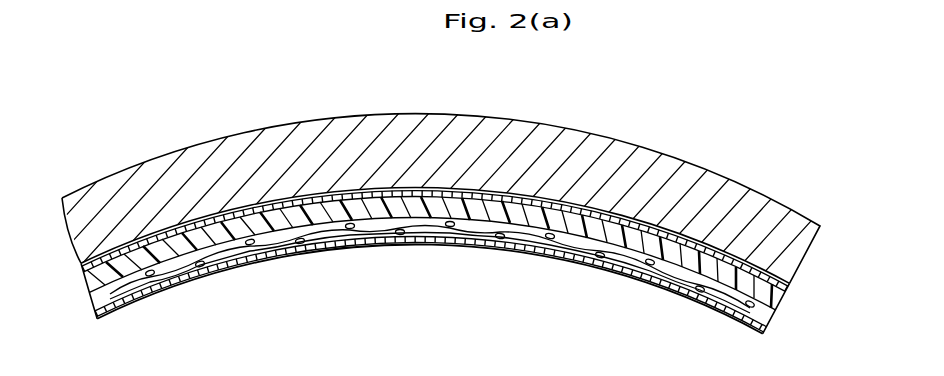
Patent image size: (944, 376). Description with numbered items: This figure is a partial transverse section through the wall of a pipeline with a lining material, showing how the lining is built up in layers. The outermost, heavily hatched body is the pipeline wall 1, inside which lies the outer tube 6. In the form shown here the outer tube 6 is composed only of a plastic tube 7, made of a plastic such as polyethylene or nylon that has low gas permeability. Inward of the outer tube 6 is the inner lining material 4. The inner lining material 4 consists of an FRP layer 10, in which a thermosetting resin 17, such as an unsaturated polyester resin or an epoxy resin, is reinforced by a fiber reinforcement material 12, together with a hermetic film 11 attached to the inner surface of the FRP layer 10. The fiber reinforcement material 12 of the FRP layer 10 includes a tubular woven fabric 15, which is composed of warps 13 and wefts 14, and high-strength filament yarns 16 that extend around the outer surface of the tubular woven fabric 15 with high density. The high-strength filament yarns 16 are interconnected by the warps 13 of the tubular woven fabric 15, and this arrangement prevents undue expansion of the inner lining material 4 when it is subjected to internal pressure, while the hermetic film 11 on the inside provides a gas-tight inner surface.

The substrate 1 is at (180, 167).
The inner lining material 4 is at (352, 260).
The outer tube 6 is at (312, 183).
The tube 7 is at (447, 190).
The FRP layer 10 is at (779, 324).
The hermetic film 11 is at (662, 282).
The fiber reinforcement material 12 is at (440, 173).
The warps 13 is at (690, 273).
The wefts 14 is at (753, 300).
The tubular woven fabric 15 is at (440, 200).
The high-strength filament yarns 16 is at (642, 240).
The thermosetting resin 17 is at (553, 210).